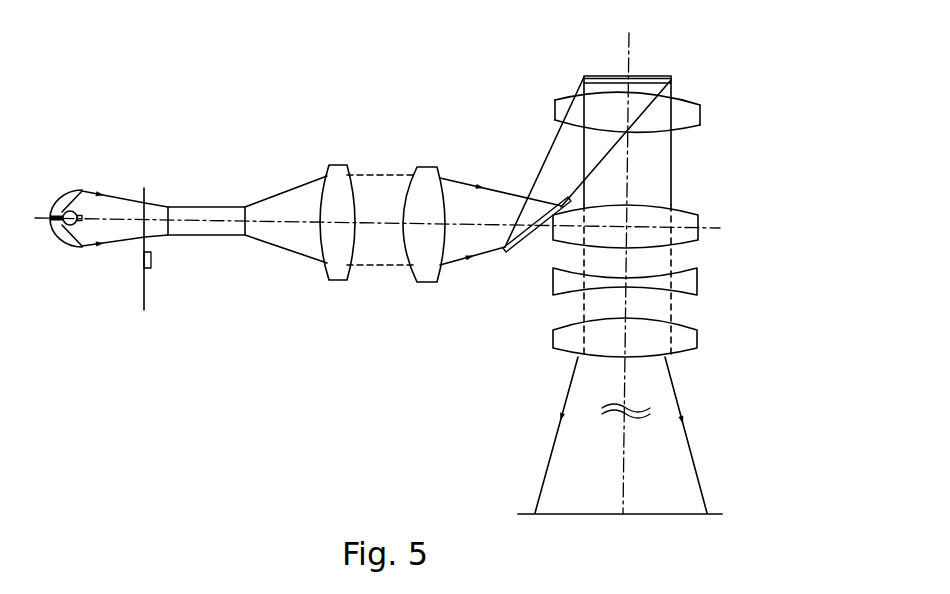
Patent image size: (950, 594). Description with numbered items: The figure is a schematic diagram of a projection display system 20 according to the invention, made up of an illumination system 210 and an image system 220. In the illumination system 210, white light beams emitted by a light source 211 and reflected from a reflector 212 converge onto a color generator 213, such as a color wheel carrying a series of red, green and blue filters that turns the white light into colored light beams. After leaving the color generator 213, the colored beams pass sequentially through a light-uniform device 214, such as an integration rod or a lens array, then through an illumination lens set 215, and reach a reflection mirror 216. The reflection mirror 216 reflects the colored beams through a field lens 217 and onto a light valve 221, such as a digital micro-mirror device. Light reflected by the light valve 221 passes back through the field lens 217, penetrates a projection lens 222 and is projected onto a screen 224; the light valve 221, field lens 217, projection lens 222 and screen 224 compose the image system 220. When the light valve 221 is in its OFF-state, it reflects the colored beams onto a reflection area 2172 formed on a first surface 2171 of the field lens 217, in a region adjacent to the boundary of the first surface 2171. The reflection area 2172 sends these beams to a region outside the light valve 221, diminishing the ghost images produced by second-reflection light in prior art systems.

The projection display system 20 is at (344, 54).
The illumination system 210 is at (239, 311).
The light source 211 is at (62, 243).
The reflector 212 is at (63, 192).
The color generator 213 is at (137, 200).
The light-uniform device 214 is at (205, 212).
The illumination lens set 215 is at (325, 295).
The reflection mirror 216 is at (516, 252).
The field lens 217 is at (660, 108).
The first surface 2171 is at (640, 134).
The reflection area 2172 is at (697, 124).
The image system 220 is at (811, 187).
The light valve 221 is at (650, 76).
The projection lens 222 is at (743, 230).
The screen 224 is at (672, 515).